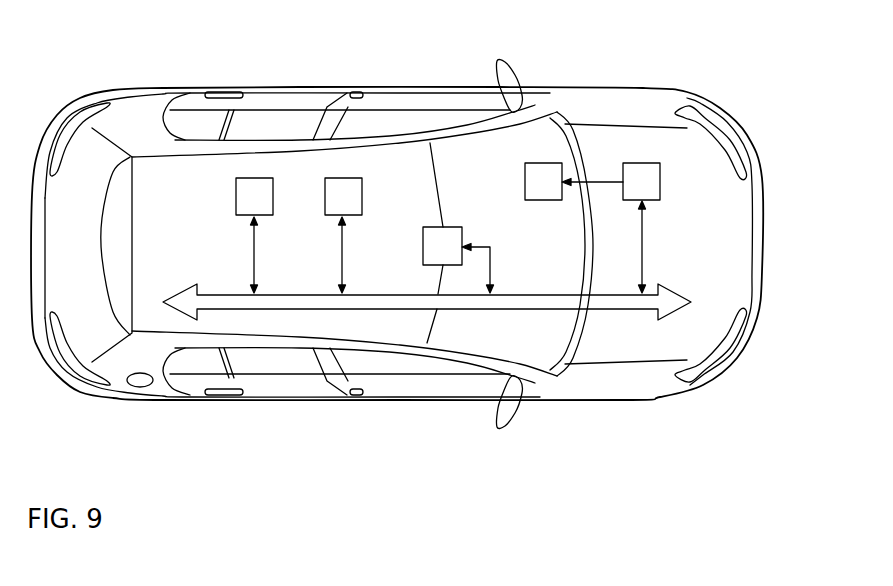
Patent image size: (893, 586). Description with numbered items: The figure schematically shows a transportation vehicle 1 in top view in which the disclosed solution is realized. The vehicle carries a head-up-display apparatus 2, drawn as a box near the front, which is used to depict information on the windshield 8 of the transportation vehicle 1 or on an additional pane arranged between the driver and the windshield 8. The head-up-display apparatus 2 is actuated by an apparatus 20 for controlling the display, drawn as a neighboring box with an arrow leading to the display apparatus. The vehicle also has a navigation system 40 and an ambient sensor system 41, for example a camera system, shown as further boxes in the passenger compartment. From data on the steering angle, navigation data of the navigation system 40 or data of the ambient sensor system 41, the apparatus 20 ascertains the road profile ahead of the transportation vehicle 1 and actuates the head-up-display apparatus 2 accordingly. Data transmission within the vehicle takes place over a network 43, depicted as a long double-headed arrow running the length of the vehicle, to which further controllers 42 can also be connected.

The transportation vehicle 1 is at (643, 88).
The head-up-display apparatus 2 is at (543, 163).
The windshield 8 is at (470, 135).
The apparatus for controlling the display 20 is at (660, 173).
The navigation system 40 is at (342, 176).
The ambient sensor system 41 is at (431, 227).
The further controllers 42 is at (253, 176).
The network 43 is at (278, 307).